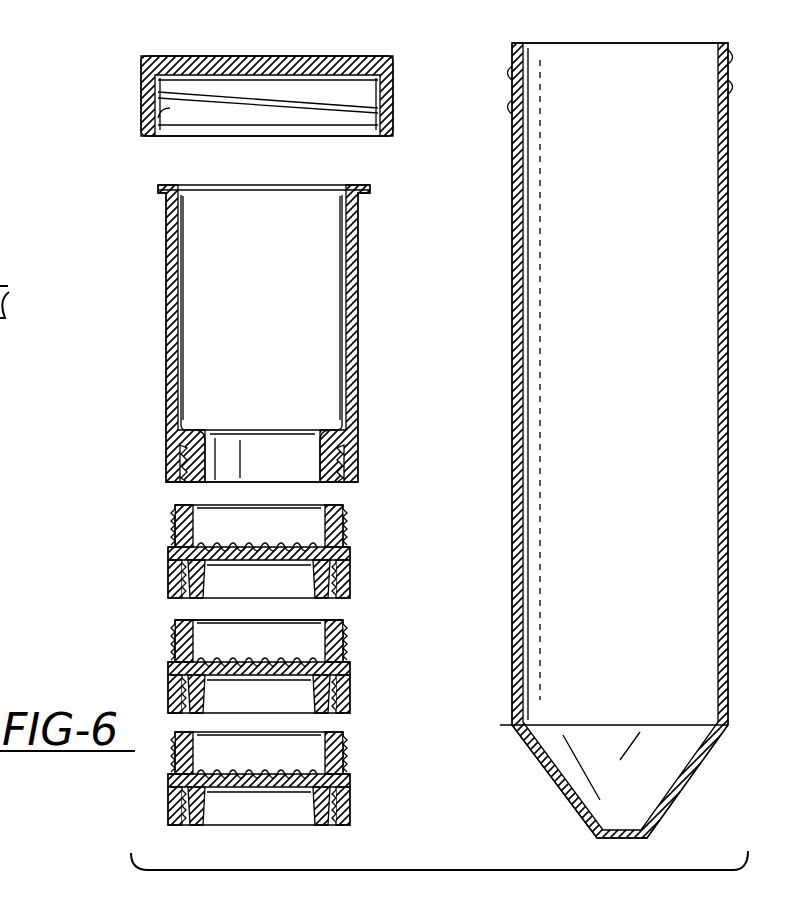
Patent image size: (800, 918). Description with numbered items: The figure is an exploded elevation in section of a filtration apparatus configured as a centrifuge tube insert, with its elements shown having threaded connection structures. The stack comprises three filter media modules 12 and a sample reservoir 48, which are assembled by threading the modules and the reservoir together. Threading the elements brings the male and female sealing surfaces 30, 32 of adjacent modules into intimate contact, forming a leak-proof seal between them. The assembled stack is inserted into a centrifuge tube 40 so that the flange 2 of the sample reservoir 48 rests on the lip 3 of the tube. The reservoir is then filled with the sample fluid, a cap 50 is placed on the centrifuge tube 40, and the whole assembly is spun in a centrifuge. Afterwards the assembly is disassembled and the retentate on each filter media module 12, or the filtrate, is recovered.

The flange 2 is at (308, 334).
The lip 3 is at (730, 45).
The filter media module 12 is at (360, 571).
The female sealing surface 30 is at (312, 621).
The male sealing surface 32 is at (340, 480).
The centrifuge tube 40 is at (643, 437).
The sample reservoir 48 is at (358, 315).
The cap 50 is at (395, 88).